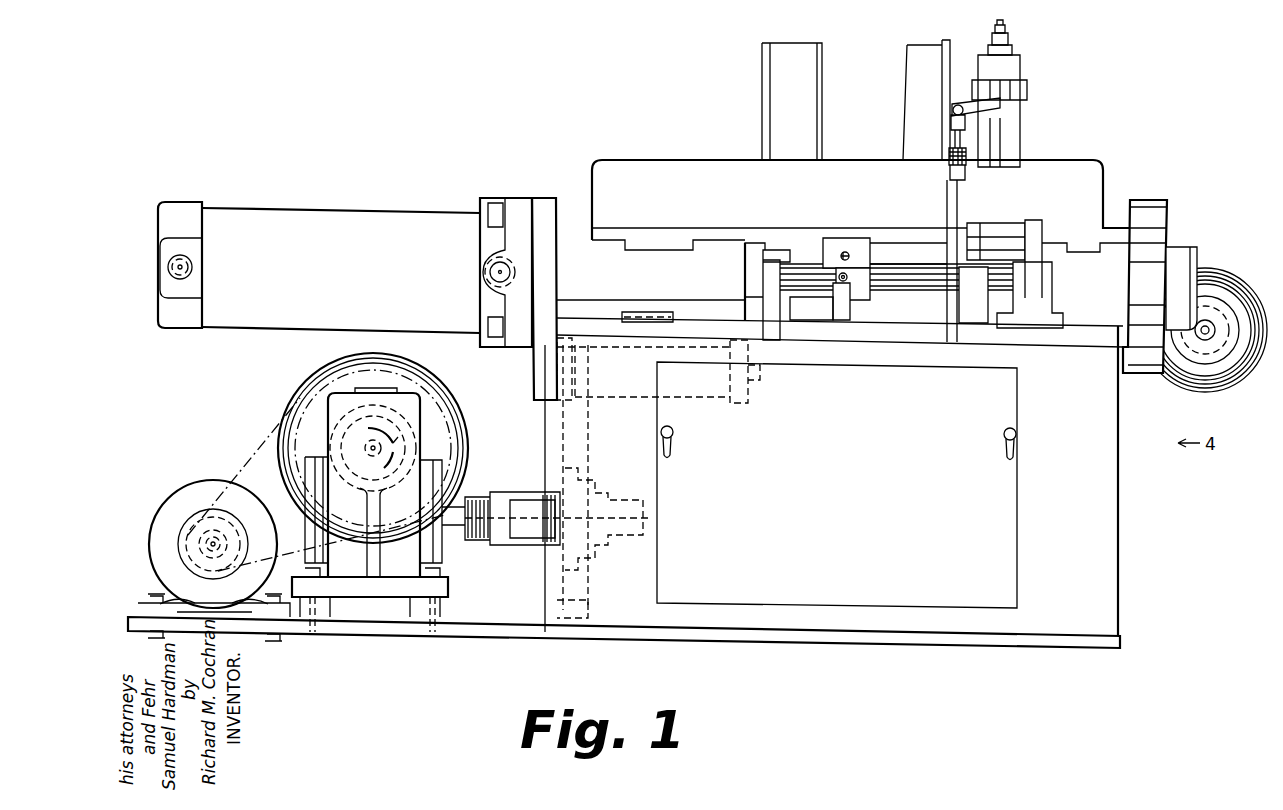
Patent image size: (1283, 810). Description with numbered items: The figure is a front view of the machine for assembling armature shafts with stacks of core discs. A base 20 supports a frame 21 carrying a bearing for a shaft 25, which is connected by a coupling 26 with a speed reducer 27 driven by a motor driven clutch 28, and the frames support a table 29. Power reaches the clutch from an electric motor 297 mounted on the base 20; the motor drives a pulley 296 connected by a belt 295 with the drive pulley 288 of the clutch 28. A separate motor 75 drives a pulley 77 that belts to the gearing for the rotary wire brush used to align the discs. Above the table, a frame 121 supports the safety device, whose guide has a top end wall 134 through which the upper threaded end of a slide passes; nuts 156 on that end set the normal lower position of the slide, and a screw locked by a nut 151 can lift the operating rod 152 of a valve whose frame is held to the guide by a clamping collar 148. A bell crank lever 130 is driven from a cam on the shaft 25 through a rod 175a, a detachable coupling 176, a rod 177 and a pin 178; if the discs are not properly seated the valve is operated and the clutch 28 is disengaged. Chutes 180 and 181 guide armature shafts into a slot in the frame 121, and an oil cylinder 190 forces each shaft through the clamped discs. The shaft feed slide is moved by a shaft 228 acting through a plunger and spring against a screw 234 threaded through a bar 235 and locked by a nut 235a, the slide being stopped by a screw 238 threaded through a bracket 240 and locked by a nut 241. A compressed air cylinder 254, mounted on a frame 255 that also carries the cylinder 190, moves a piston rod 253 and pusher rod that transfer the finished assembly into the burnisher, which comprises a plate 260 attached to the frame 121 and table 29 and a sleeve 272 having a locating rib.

The base 20 is at (385, 631).
The frame 21 is at (589, 612).
The shaft 25 is at (450, 530).
The coupling 26 is at (520, 495).
The speed reducer 27 is at (413, 407).
The motor driven clutch 28 is at (440, 432).
The table 29 is at (868, 337).
The motor 75 is at (1237, 364).
The pulley 77 is at (1212, 358).
The frame 121 is at (1078, 178).
The bell crank lever 130 is at (1003, 120).
The top end wall 134 is at (1022, 62).
The clamping collar 148 is at (1028, 93).
The nut 151 is at (1010, 38).
The operating rod 152 is at (1008, 27).
The nuts 156 is at (1014, 50).
The rod 175a is at (945, 215).
The detachable coupling 176 is at (948, 156).
The rod 177 is at (954, 137).
The pin 178 is at (955, 106).
The chute 180 is at (793, 48).
The chute 181 is at (922, 55).
The cylinder 190 is at (386, 222).
The shaft 228 is at (924, 288).
The screw 234 is at (840, 256).
The bar 235 is at (872, 255).
The nut 235a is at (845, 250).
The screw 238 is at (838, 277).
The bracket 240 is at (850, 302).
The nut 241 is at (830, 305).
The piston rod 253 is at (757, 383).
The compressed air cylinder 254 is at (624, 392).
The frame 255 is at (538, 402).
The plate 260 is at (1146, 367).
The sleeve 272 is at (1199, 254).
The drive pulley 288 is at (398, 366).
The belt 295 is at (248, 468).
The pulley 296 is at (193, 536).
The electric motor 297 is at (166, 574).